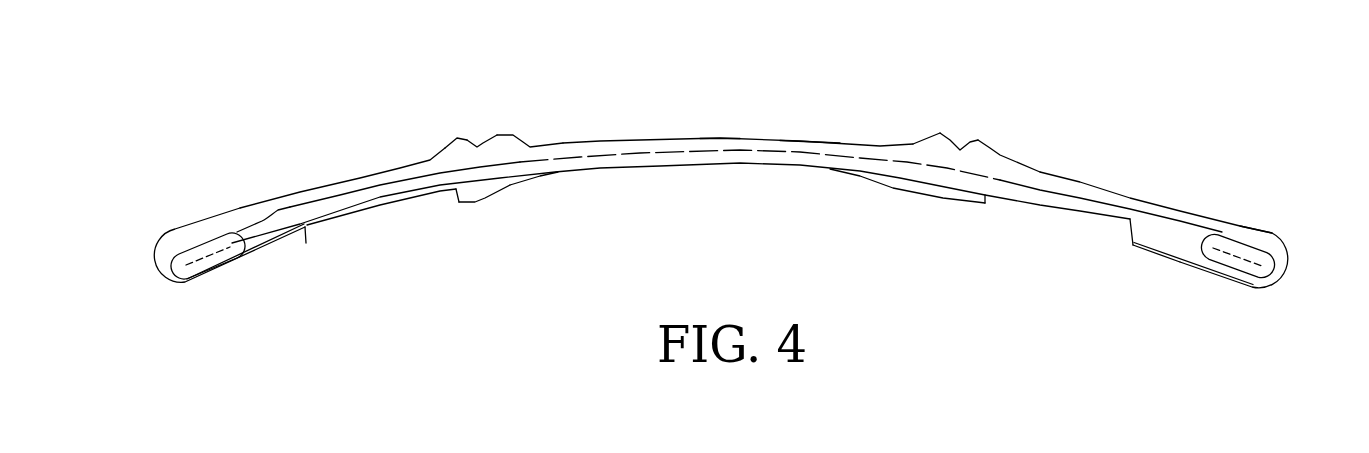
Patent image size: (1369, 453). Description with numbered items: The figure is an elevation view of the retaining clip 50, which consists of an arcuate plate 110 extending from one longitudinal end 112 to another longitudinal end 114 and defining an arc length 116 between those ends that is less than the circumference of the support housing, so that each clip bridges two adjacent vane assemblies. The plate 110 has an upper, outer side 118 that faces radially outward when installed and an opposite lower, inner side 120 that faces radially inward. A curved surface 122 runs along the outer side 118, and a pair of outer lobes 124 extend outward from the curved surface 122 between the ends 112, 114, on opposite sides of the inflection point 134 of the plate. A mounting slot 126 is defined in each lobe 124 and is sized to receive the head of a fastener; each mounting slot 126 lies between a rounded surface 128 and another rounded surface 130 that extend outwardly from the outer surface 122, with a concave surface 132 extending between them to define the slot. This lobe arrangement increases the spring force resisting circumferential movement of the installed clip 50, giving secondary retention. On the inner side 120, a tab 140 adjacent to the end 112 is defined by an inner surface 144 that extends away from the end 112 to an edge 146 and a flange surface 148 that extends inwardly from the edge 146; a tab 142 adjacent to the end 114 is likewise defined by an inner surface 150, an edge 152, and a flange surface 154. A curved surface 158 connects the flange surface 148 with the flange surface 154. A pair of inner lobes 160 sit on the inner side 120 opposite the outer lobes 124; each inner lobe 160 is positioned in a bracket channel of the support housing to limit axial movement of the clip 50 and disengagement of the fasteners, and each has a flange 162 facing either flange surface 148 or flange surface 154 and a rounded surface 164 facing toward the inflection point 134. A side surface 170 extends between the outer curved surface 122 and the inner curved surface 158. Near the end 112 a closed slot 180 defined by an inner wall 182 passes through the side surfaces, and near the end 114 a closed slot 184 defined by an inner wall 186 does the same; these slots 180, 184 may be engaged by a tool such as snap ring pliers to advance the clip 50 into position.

The retaining clip 50 is at (1200, 108).
The arcuate plate 110 is at (647, 138).
The longitudinal end 112 is at (160, 287).
The longitudinal end 114 is at (1290, 281).
The arc length 116 is at (290, 204).
The outer side 118 is at (810, 141).
The inner side 120 is at (767, 167).
The curved surface 122 is at (357, 174).
The outer lobes 124 is at (461, 105).
The mounting slot 126 is at (484, 130).
The rounded surface 128 is at (444, 154).
The rounded surface 130 is at (524, 137).
The concave surface 132 is at (481, 201).
The inflection point 134 is at (720, 139).
The tab 140 is at (272, 297).
The tab 142 is at (1170, 297).
The inner surface 144 is at (230, 272).
The edge 146 is at (312, 252).
The flange surface 148 is at (311, 242).
The inner surface 150 is at (1211, 280).
The edge 152 is at (1129, 252).
The flange surface 154 is at (1131, 236).
The curved surface 158 is at (720, 169).
The inner lobes 160 is at (530, 206).
The flange 162 is at (457, 206).
The rounded surface 164 is at (550, 176).
The side surface 170 is at (1081, 180).
The slot 180 is at (195, 234).
The inner wall 182 is at (201, 234).
The slot 184 is at (1220, 230).
The inner wall 186 is at (1244, 245).